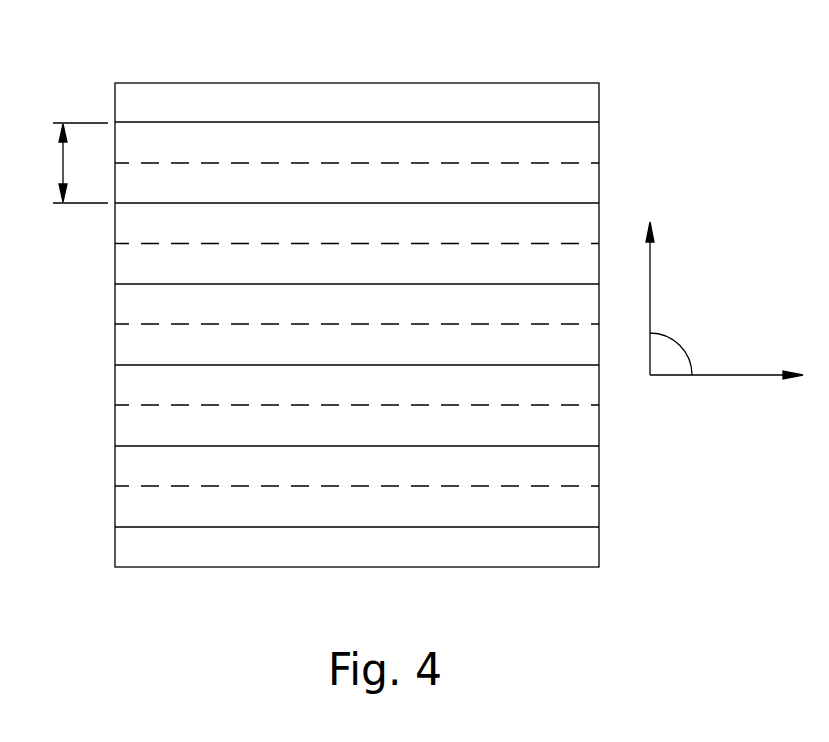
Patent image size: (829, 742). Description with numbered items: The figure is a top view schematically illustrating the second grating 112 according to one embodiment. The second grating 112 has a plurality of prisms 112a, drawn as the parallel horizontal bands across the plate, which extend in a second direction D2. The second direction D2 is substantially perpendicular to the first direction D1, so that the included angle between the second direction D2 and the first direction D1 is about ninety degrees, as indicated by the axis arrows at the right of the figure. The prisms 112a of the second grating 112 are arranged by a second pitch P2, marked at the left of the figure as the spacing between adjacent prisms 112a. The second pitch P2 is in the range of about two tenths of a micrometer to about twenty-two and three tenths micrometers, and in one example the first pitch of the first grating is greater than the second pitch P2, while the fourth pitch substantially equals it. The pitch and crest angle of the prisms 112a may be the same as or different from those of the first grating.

The second grating 112 is at (350, 83).
The prisms 112a is at (488, 133).
The second pitch P2 is at (63, 163).
The first direction D1 is at (672, 298).
The second direction D2 is at (726, 397).